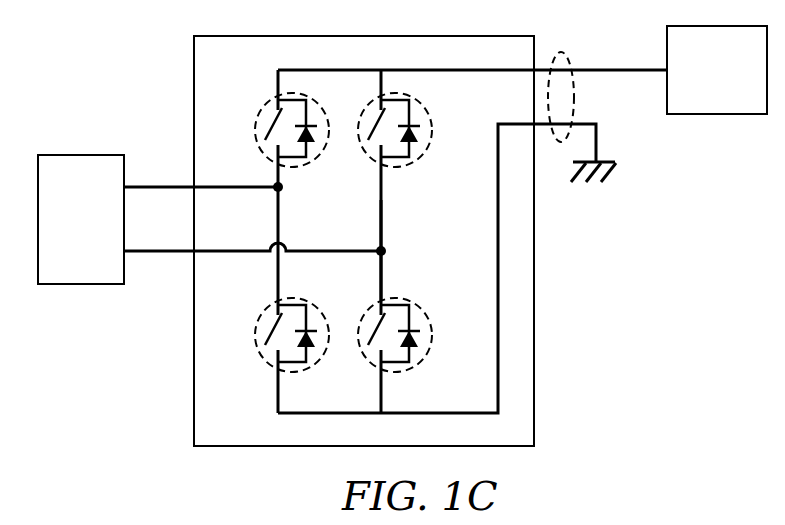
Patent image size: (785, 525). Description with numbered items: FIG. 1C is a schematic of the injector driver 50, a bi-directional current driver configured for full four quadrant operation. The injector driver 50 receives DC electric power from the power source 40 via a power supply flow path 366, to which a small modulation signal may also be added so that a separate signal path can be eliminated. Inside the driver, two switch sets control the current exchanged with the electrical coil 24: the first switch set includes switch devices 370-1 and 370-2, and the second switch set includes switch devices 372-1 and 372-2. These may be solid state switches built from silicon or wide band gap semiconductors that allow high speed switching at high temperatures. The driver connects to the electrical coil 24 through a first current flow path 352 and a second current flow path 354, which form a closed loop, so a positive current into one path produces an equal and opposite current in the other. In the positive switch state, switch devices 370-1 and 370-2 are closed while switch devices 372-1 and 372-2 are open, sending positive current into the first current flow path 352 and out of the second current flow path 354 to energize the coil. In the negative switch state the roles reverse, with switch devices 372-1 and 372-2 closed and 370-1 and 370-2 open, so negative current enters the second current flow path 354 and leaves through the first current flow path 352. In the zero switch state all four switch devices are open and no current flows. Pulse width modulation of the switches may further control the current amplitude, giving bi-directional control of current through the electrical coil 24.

The electrical coil 24 is at (81, 219).
The power source 40 is at (717, 70).
The injector driver 50 is at (398, 250).
The first current flow path 352 is at (203, 175).
The second current flow path 354 is at (252, 237).
The power supply flow path 366 is at (571, 60).
The switch device 370-1 is at (266, 125).
The switch device 370-2 is at (422, 332).
The switch device 372-1 is at (422, 124).
The switch device 372-2 is at (266, 332).